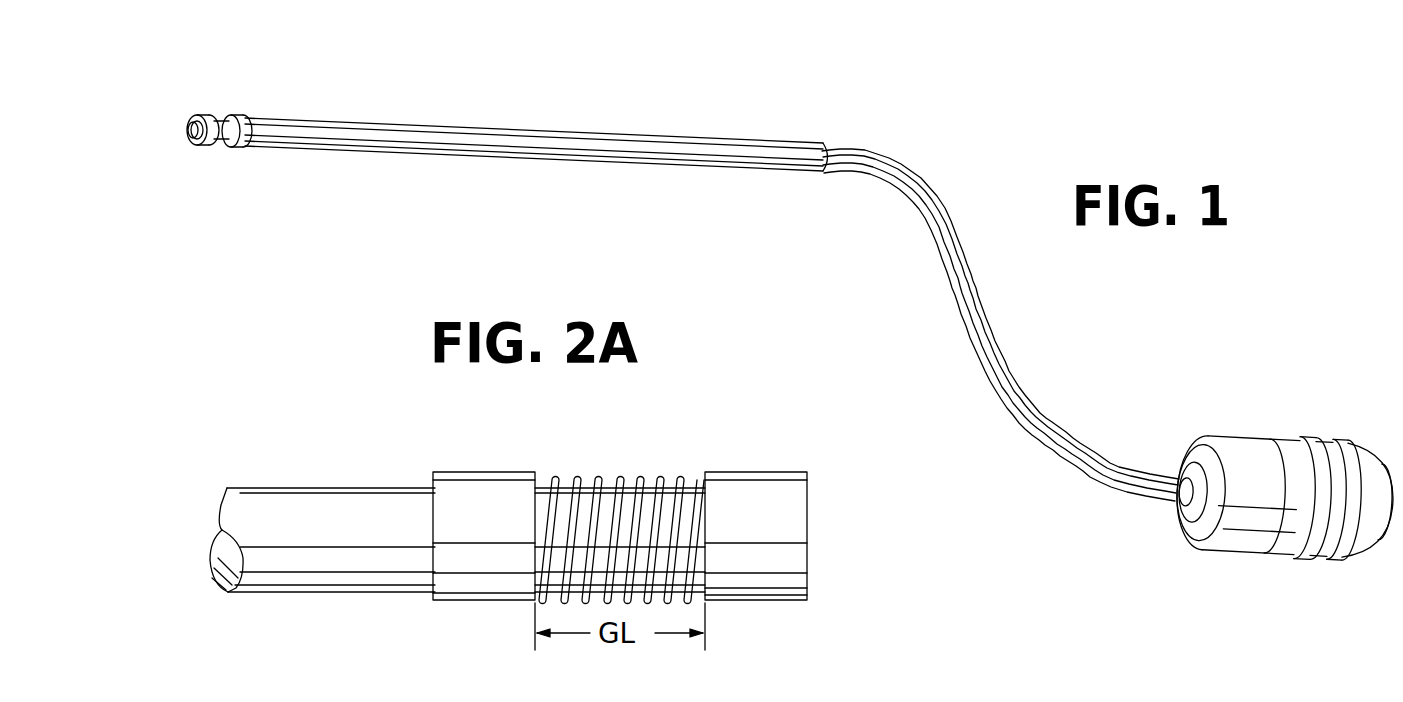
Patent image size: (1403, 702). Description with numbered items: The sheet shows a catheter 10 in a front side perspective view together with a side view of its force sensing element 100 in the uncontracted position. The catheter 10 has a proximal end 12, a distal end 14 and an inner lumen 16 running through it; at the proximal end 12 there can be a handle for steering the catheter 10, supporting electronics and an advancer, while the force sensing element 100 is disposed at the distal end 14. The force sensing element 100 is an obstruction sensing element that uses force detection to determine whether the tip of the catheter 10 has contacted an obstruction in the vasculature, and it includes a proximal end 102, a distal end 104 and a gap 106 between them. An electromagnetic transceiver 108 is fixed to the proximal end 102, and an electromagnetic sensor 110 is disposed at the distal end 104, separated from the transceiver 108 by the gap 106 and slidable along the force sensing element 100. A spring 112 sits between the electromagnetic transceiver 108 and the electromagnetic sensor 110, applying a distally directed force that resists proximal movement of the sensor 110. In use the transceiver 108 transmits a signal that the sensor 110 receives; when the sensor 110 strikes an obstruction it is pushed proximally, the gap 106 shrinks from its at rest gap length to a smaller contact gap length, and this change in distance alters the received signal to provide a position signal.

In FIG. 1, the catheter 10 is at (897, 150).
In FIG. 1, the proximal end 12 is at (1177, 470).
In FIG. 1, the distal end 14 is at (268, 135).
In FIG. 1, the inner lumen 16 is at (186, 128).
In FIG. 1, the force sensing element 100 is at (235, 130).
In FIG. 2A, the force sensing element 100 is at (644, 538).
In FIG. 2A, the proximal end 102 is at (432, 508).
In FIG. 2A, the distal end 104 is at (808, 551).
In FIG. 2A, the gap 106 is at (586, 506).
In FIG. 1, the electromagnetic transceiver 108 is at (251, 111).
In FIG. 2A, the electromagnetic transceiver 108 is at (474, 588).
In FIG. 1, the electromagnetic sensor 110 is at (206, 110).
In FIG. 2A, the electromagnetic sensor 110 is at (786, 585).
In FIG. 2A, the spring 112 is at (548, 510).